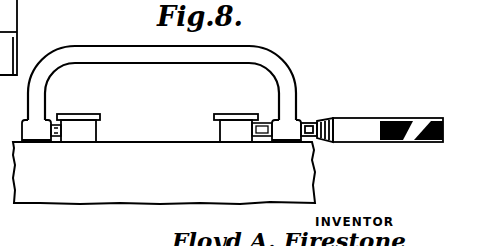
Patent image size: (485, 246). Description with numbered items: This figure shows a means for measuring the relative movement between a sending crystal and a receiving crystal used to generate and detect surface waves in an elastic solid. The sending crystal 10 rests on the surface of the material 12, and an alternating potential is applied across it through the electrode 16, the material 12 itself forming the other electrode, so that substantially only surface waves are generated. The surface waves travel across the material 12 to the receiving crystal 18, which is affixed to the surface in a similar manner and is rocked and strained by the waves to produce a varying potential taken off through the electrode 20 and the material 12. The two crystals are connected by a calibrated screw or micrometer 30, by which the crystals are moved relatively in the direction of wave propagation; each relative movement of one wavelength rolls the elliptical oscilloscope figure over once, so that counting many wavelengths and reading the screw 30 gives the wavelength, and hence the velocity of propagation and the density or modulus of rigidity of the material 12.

The sending crystal 10 is at (87, 133).
The material 12 is at (158, 200).
The electrode 16 is at (97, 115).
The receiving crystal 18 is at (228, 132).
The electrode 20 is at (240, 115).
The calibrated screw or micrometer 30 is at (287, 89).